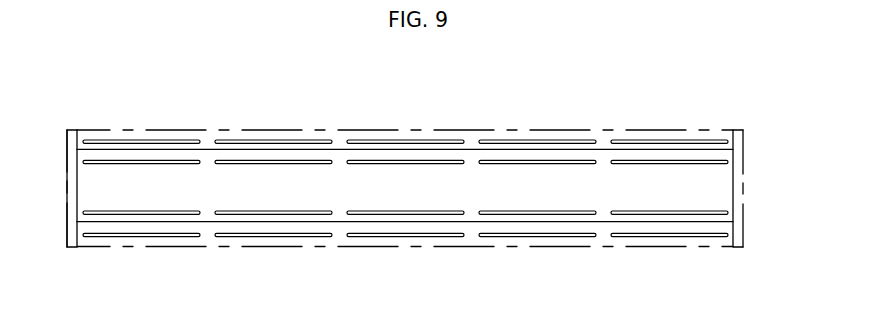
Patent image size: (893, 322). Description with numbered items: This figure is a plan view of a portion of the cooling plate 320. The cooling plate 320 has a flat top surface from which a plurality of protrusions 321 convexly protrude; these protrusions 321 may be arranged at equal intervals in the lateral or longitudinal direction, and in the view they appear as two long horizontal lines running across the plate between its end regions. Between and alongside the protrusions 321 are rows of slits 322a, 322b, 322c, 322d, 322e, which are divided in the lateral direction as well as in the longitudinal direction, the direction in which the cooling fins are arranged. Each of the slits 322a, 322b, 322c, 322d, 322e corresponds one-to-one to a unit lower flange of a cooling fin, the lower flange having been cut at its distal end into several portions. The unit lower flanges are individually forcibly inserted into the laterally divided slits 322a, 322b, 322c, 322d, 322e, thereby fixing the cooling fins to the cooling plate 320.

The cooling plate 320 is at (78, 121).
The protrusion 321 is at (728, 150).
The slit 322a is at (689, 165).
The slit 322b is at (557, 165).
The slit 322c is at (424, 165).
The slit 322d is at (292, 165).
The slit 322e is at (161, 165).